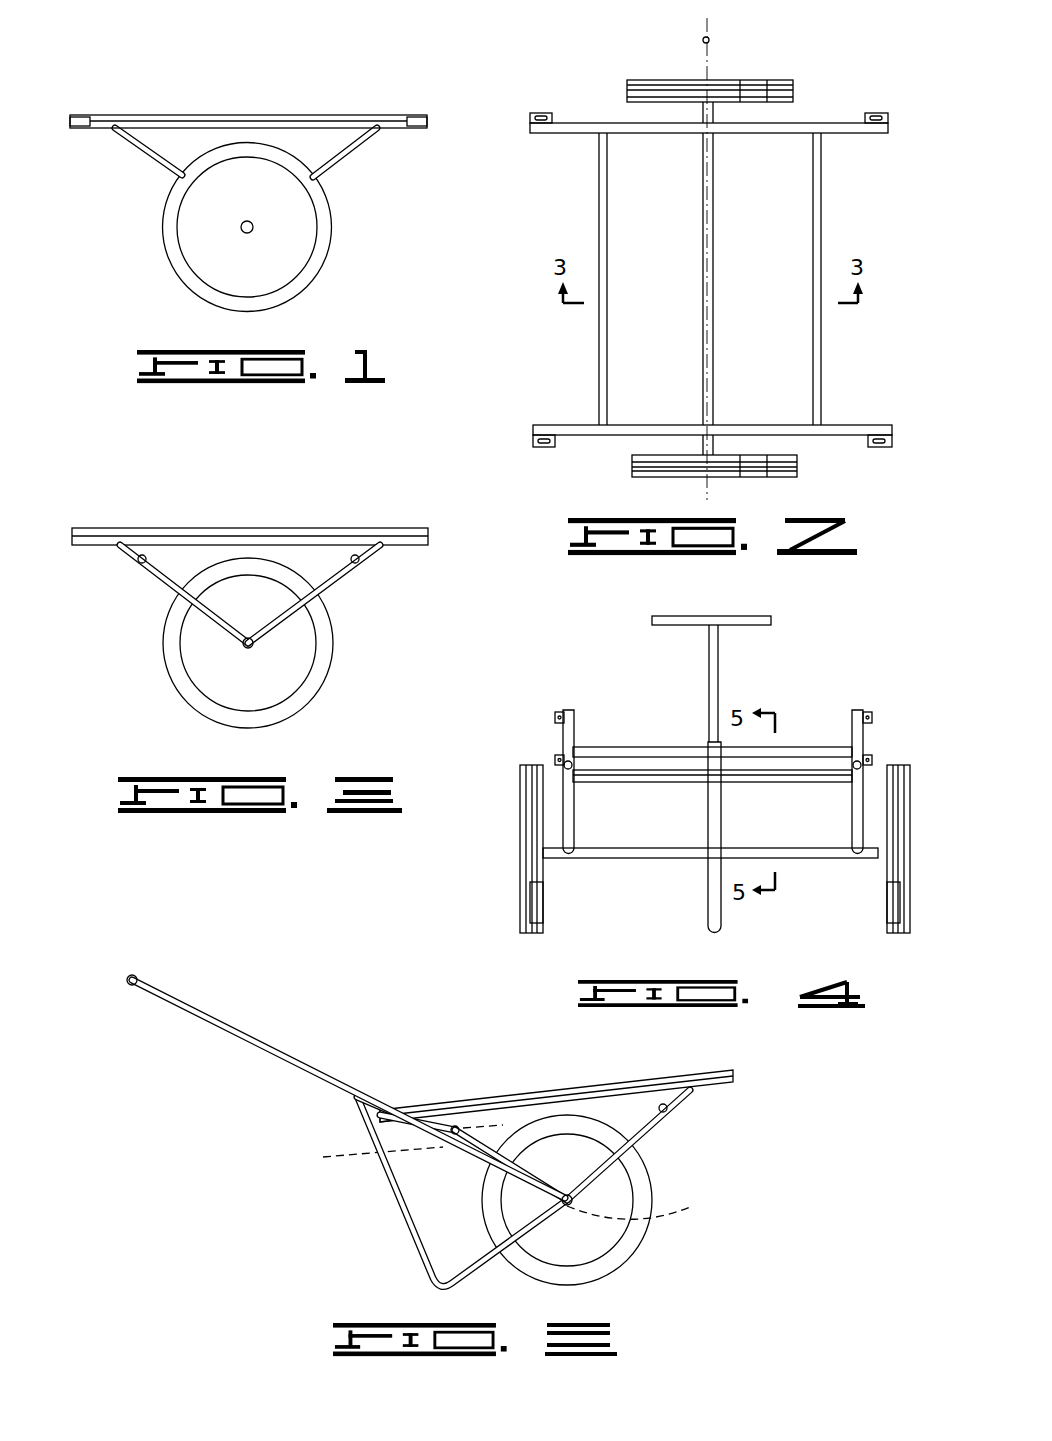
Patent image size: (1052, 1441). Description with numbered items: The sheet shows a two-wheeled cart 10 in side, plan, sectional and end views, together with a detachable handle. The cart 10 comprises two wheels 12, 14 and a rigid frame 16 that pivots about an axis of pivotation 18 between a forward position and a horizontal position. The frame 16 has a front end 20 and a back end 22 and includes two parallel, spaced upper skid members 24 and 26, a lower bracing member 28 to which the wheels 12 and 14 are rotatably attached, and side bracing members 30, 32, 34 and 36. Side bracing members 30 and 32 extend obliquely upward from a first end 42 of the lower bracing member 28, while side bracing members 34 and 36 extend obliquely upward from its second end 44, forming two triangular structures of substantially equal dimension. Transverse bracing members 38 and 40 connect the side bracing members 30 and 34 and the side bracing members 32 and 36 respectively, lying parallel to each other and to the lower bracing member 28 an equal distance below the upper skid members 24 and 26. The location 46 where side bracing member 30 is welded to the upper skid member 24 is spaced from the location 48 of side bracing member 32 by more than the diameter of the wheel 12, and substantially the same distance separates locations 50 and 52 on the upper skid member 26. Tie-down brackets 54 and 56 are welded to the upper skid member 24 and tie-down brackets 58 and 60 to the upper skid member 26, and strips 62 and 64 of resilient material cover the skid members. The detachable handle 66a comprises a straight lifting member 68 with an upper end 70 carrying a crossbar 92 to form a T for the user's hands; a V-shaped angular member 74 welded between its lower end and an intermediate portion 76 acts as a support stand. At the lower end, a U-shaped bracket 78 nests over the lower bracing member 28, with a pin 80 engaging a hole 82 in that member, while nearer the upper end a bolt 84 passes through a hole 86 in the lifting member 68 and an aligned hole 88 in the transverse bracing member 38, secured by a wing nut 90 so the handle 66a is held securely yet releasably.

In FIG. 1, the cart 10 is at (360, 232).
In FIG. 2, the cart 10 is at (845, 331).
In FIG. 3, the cart 10 is at (148, 670).
In FIG. 5, the cart 10 is at (718, 1181).
In FIG. 1, the wheel 12 is at (313, 268).
In FIG. 2, the wheel 12 is at (690, 465).
In FIG. 4, the wheel 12 is at (893, 910).
In FIG. 2, the wheel 14 is at (740, 80).
In FIG. 3, the wheel 14 is at (328, 673).
In FIG. 4, the wheel 14 is at (543, 922).
In FIG. 5, the wheel 14 is at (607, 1230).
In FIG. 1, the frame 16 is at (221, 98).
In FIG. 3, the frame 16 is at (240, 516).
In FIG. 2, the axis of pivotation 18 is at (709, 38).
In FIG. 1, the front end 20 is at (425, 117).
In FIG. 2, the front end 20 is at (888, 128).
In FIG. 5, the front end 20 is at (735, 1080).
In FIG. 1, the back end 22 is at (72, 115).
In FIG. 2, the back end 22 is at (532, 128).
In FIG. 5, the back end 22 is at (378, 1125).
In FIG. 1, the upper skid member 24 is at (300, 122).
In FIG. 4, the upper skid member 24 is at (860, 766).
In FIG. 3, the upper skid member 26 is at (353, 538).
In FIG. 4, the upper skid member 26 is at (564, 766).
In FIG. 5, the upper skid member 26 is at (733, 1070).
In FIG. 2, the lower bracing member 28 is at (712, 278).
In FIG. 3, the lower bracing member 28 is at (250, 651).
In FIG. 4, the lower bracing member 28 is at (807, 858).
In FIG. 5, the lower bracing member 28 is at (562, 1212).
In FIG. 1, the side bracing member 30 is at (153, 165).
In FIG. 4, the side bracing member 30 is at (852, 802).
In FIG. 1, the side bracing member 32 is at (337, 167).
In FIG. 3, the side bracing member 34 is at (165, 593).
In FIG. 4, the side bracing member 34 is at (574, 808).
In FIG. 5, the side bracing member 34 is at (510, 1152).
In FIG. 3, the side bracing member 36 is at (327, 603).
In FIG. 5, the side bracing member 36 is at (640, 1133).
In FIG. 2, the transverse bracing member 38 is at (599, 222).
In FIG. 3, the transverse bracing member 38 is at (137, 564).
In FIG. 4, the transverse bracing member 38 is at (788, 783).
In FIG. 5, the transverse bracing member 38 is at (462, 1127).
In FIG. 2, the transverse bracing member 40 is at (821, 240).
In FIG. 3, the transverse bracing member 40 is at (360, 565).
In FIG. 4, the transverse bracing member 40 is at (792, 747).
In FIG. 5, the transverse bracing member 40 is at (667, 1112).
In FIG. 2, the first end 42 is at (705, 440).
In FIG. 4, the first end 42 is at (873, 860).
In FIG. 2, the second end 44 is at (704, 112).
In FIG. 4, the second end 44 is at (553, 858).
In FIG. 1, the location 46 is at (117, 132).
In FIG. 1, the location 48 is at (380, 133).
In FIG. 3, the location 50 is at (120, 546).
In FIG. 5, the location 50 is at (440, 1098).
In FIG. 3, the location 52 is at (378, 547).
In FIG. 5, the location 52 is at (690, 1091).
In FIG. 1, the tie-down bracket 54 is at (423, 129).
In FIG. 2, the tie-down bracket 54 is at (890, 447).
In FIG. 4, the tie-down bracket 54 is at (872, 713).
In FIG. 1, the tie-down bracket 56 is at (83, 130).
In FIG. 2, the tie-down bracket 56 is at (543, 447).
In FIG. 4, the tie-down bracket 56 is at (872, 758).
In FIG. 2, the tie-down bracket 58 is at (883, 113).
In FIG. 4, the tie-down bracket 58 is at (555, 716).
In FIG. 2, the tie-down bracket 60 is at (533, 113).
In FIG. 4, the tie-down bracket 60 is at (555, 759).
In FIG. 1, the strip of resilient material 62 is at (250, 114).
In FIG. 2, the strip of resilient material 62 is at (828, 425).
In FIG. 4, the strip of resilient material 62 is at (858, 712).
In FIG. 2, the strip of resilient material 64 is at (832, 133).
In FIG. 3, the strip of resilient material 64 is at (290, 528).
In FIG. 4, the strip of resilient material 64 is at (574, 740).
In FIG. 5, the strip of resilient material 64 is at (607, 1084).
In FIG. 4, the detachable handle 66a is at (701, 604).
In FIG. 5, the detachable handle 66a is at (272, 1073).
In FIG. 4, the lifting member 68 is at (718, 700).
In FIG. 5, the lifting member 68 is at (257, 1040).
In FIG. 4, the upper end 70 is at (718, 647).
In FIG. 5, the upper end 70 is at (170, 994).
In FIG. 4, the angular member 74 is at (721, 812).
In FIG. 5, the angular member 74 is at (417, 1248).
In FIG. 5, the portion 76 is at (356, 1094).
In FIG. 5, the U-shaped bracket 78 is at (573, 1197).
In FIG. 5, the pin 80 is at (575, 1210).
In FIG. 5, the hole 82 is at (640, 1220).
In FIG. 5, the bolt 84 is at (456, 1125).
In FIG. 5, the hole 86 is at (365, 1157).
In FIG. 5, the hole 88 is at (496, 1125).
In FIG. 5, the nut 90 is at (443, 1155).
In FIG. 4, the crossbar 92 is at (771, 620).
In FIG. 5, the crossbar 92 is at (133, 972).